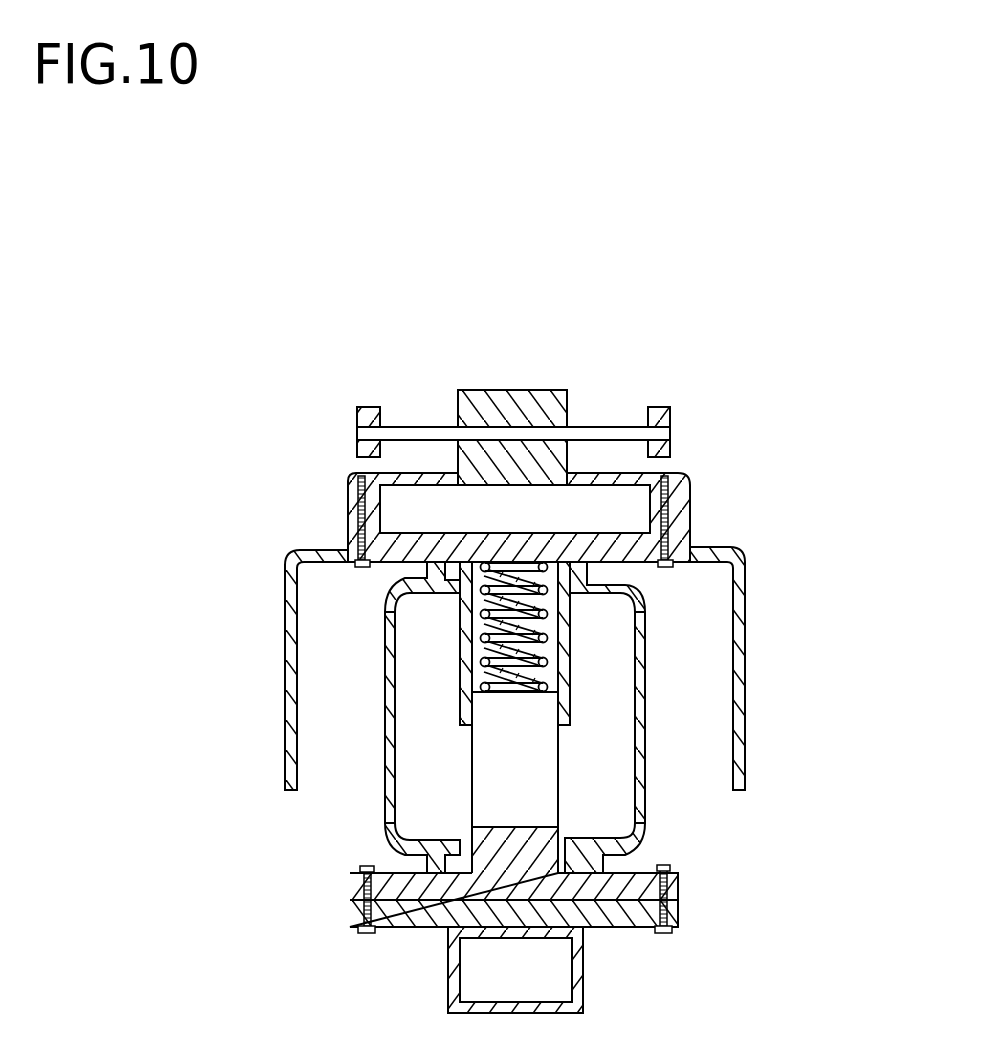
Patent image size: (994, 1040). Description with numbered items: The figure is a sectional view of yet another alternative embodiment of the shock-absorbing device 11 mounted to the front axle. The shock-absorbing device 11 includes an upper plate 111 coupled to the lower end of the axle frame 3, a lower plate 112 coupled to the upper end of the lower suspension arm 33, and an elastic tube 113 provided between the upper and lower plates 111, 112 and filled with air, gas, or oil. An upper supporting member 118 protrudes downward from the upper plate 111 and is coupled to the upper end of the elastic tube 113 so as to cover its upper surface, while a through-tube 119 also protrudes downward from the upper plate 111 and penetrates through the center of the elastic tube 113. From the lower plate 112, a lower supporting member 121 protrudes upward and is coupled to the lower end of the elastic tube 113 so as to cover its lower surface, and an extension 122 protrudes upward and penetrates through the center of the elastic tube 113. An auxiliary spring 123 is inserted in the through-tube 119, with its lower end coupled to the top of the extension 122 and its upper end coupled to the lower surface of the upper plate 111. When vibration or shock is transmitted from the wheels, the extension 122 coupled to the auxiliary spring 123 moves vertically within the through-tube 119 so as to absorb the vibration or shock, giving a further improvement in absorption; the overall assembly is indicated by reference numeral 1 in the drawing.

The cushioning device 1 is at (552, 697).
The axle frame 3 is at (690, 487).
The shock-absorbing device 11 is at (599, 710).
The lower suspension arm 33 is at (670, 412).
The upper plate 111 is at (645, 552).
The lower plate 112 is at (677, 870).
The elastic tube 113 is at (642, 672).
The upper supporting member 118 is at (380, 592).
The through-tube 119 is at (464, 678).
The lower supporting member 121 is at (380, 826).
The extension 122 is at (488, 768).
The auxiliary spring 123 is at (497, 640).